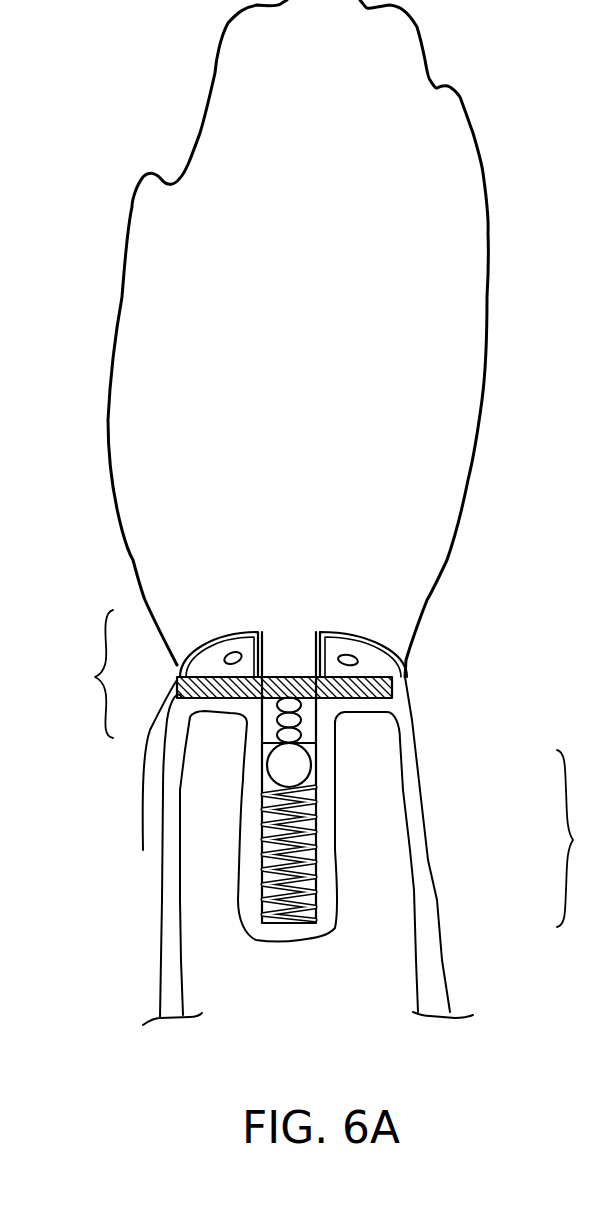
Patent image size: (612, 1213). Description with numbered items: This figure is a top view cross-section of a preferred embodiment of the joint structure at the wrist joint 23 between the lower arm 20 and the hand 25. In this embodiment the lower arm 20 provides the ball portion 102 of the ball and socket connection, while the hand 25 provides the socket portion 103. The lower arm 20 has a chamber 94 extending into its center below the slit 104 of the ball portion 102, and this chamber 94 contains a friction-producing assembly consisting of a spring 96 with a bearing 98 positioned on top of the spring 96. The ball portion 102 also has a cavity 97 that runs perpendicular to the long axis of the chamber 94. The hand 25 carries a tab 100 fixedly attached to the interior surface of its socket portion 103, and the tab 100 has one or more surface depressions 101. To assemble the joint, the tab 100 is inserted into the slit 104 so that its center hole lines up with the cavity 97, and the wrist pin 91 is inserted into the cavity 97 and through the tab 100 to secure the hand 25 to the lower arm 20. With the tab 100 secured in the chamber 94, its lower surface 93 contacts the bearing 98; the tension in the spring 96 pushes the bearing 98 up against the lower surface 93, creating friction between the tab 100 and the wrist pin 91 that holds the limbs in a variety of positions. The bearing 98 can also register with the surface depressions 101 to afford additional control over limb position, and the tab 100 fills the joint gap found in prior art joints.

The hand 25 is at (380, 208).
The lower arm 20 is at (363, 945).
The wrist joint 23 is at (310, 768).
The wrist pin 91 is at (393, 686).
The lower surface 93 is at (311, 756).
The chamber 94 is at (317, 872).
The spring 96 is at (308, 827).
The cavity 97 is at (393, 652).
The bearing 98 is at (282, 760).
The tab 100 is at (305, 712).
The surface depressions 101 is at (283, 677).
The ball portion 102 is at (357, 652).
The socket portion 103 is at (222, 637).
The slit 104 is at (317, 632).